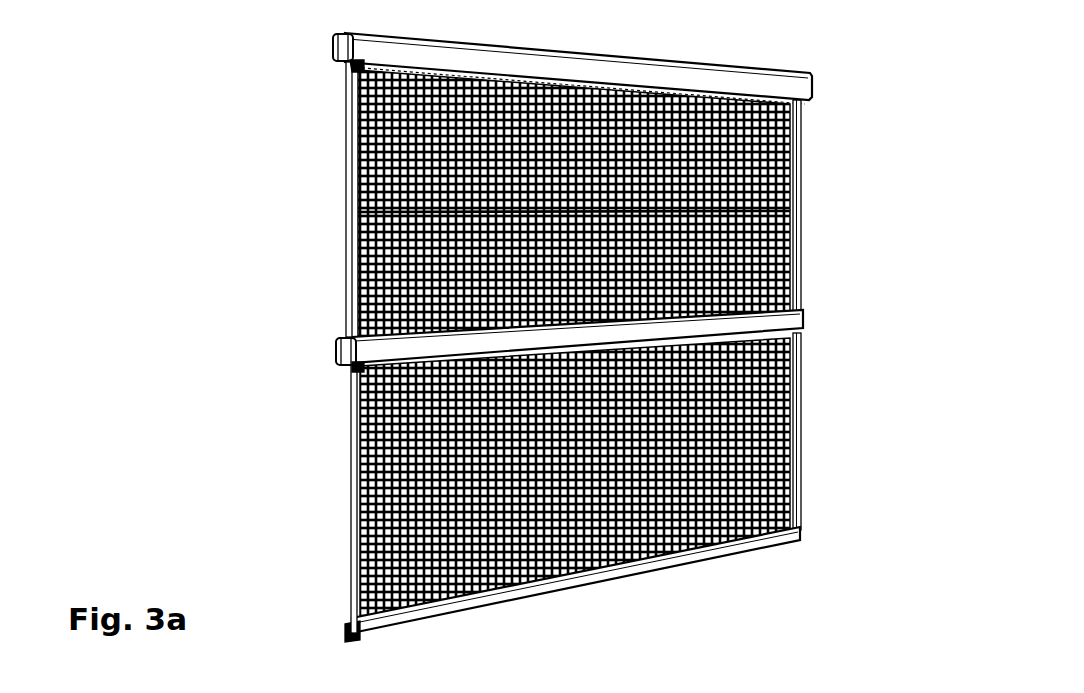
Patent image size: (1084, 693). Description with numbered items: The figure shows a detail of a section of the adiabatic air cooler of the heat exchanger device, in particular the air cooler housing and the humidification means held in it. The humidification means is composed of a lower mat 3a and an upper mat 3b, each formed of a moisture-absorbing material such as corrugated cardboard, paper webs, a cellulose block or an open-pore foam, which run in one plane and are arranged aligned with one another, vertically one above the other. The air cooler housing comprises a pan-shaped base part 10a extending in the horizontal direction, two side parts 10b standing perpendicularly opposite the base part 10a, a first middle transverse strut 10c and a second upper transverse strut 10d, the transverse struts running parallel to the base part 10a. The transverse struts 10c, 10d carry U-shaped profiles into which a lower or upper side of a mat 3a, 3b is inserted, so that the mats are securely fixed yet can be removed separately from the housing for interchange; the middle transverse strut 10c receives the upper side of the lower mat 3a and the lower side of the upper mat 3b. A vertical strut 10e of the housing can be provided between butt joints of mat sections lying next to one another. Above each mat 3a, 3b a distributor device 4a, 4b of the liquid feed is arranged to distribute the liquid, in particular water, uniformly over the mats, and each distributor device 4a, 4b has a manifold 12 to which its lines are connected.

The lower mat 3a is at (801, 456).
The upper mat 3b is at (801, 213).
The distributor device 4a is at (378, 353).
The distributor device 4b is at (356, 62).
The base part 10a is at (620, 582).
The side parts 10b is at (347, 248).
The first middle transverse strut 10c is at (767, 318).
The second upper transverse strut 10d is at (755, 83).
The vertical strut 10e is at (801, 265).
The manifold 12 is at (334, 48).